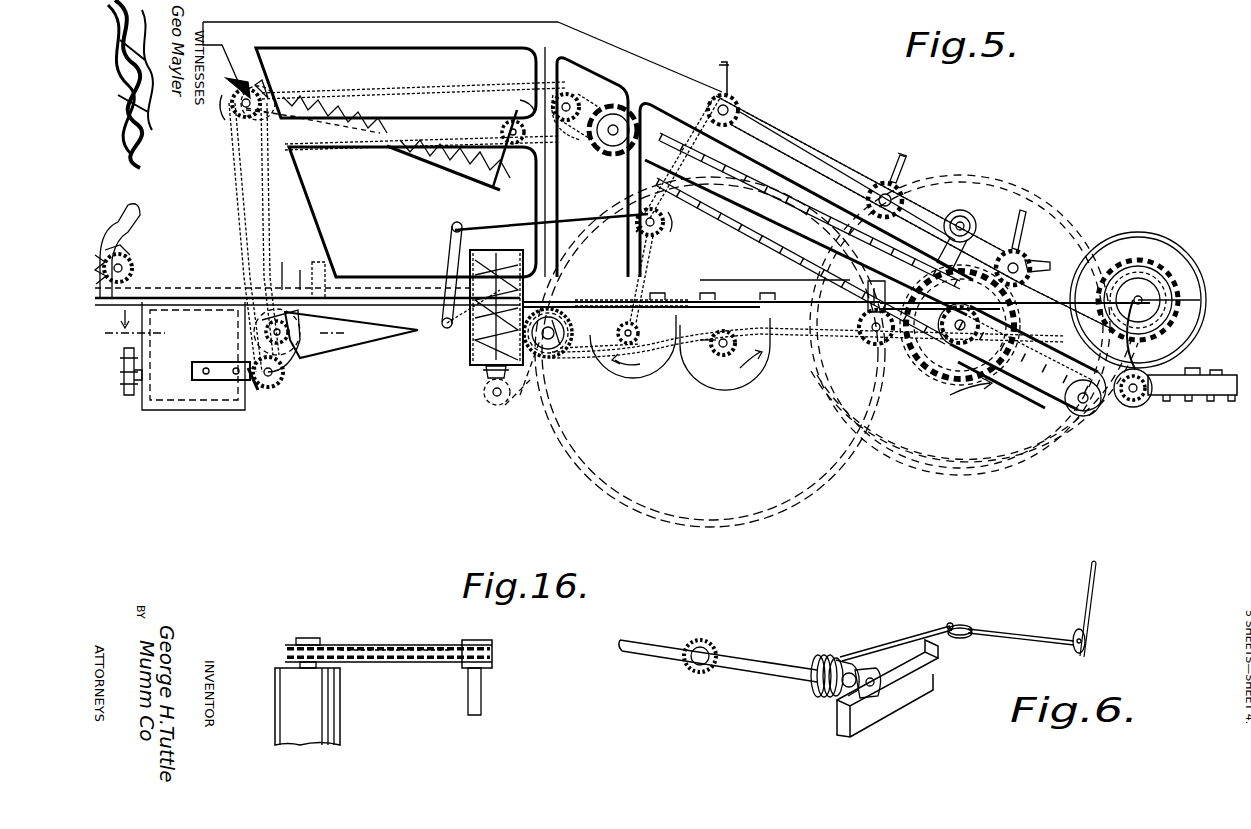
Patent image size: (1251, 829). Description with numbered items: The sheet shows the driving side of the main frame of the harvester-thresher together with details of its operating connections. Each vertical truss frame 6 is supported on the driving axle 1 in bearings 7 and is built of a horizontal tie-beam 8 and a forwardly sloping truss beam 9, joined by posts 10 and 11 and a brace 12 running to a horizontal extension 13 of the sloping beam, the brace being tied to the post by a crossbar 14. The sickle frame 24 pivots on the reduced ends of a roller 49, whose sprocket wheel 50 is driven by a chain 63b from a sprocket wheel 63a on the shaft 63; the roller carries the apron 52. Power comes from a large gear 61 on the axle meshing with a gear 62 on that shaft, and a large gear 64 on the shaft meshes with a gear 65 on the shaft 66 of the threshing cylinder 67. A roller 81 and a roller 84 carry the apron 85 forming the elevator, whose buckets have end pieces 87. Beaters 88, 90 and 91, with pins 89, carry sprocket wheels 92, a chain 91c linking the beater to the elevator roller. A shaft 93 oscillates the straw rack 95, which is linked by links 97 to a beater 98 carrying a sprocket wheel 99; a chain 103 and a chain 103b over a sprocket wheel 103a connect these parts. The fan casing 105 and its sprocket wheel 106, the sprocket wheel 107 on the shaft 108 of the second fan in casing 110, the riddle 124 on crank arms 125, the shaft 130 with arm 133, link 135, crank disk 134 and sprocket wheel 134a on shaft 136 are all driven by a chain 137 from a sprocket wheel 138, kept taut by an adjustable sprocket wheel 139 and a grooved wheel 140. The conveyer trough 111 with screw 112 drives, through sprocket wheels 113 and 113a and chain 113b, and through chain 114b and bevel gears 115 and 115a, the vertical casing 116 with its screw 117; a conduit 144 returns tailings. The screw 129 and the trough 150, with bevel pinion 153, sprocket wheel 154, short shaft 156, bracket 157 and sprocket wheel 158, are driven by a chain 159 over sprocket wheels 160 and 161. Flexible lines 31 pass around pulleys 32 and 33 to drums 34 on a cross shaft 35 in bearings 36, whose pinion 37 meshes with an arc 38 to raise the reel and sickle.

In FIG. 5, the driving axle 1 is at (702, 343).
In FIG. 5, the vertical truss frames 6 is at (552, 34).
In FIG. 5, the bearings 7 is at (716, 310).
In FIG. 5, the horizontal tie-beam 8 is at (382, 295).
In FIG. 6, the horizontal tie-beam 8 is at (917, 682).
In FIG. 5, the forwardly sloping truss beam 9 is at (762, 150).
In FIG. 5, the post 10 is at (642, 262).
In FIG. 5, the post 11 is at (540, 205).
In FIG. 5, the brace 12 is at (300, 188).
In FIG. 5, the horizontal extension 13 is at (355, 35).
In FIG. 5, the crossbar 14 is at (405, 135).
In FIG. 5, the sickle frame 24 is at (1210, 397).
In FIG. 6, the flexible lines 31 is at (1095, 577).
In FIG. 6, the pulley 32 is at (1086, 640).
In FIG. 6, the pulley 33 is at (967, 626).
In FIG. 5, the drum 34 is at (126, 262).
In FIG. 6, the drum 34 is at (832, 656).
In FIG. 5, the cross shaft 35 is at (134, 268).
In FIG. 6, the cross shaft 35 is at (745, 659).
In FIG. 6, the bearings 36 is at (868, 700).
In FIG. 5, the pinion 37 is at (119, 248).
In FIG. 6, the pinion 37 is at (708, 640).
In FIG. 5, the arc 38 is at (128, 212).
In FIG. 5, the roller 49 is at (1134, 401).
In FIG. 5, the sprocket wheel 50 is at (1155, 385).
In FIG. 5, the apron 52 is at (1198, 370).
In FIG. 5, the large gear 61 is at (710, 352).
In FIG. 5, the gear 62 is at (962, 358).
In FIG. 5, the shaft 63 is at (942, 345).
In FIG. 5, the sprocket wheel 63a is at (995, 312).
In FIG. 5, the chain 63b is at (1036, 380).
In FIG. 5, the large gear 64 is at (995, 445).
In FIG. 5, the gear 65 is at (1128, 265).
In FIG. 5, the shaft 66 is at (1150, 290).
In FIG. 5, the threshing cylinder 67 is at (1176, 248).
In FIG. 5, the roller 81 is at (1082, 410).
In FIG. 5, the roller 84 is at (608, 154).
In FIG. 5, the apron 85 is at (726, 214).
In FIG. 5, the end pieces 87 is at (770, 206).
In FIG. 5, the beater 88 is at (1020, 246).
In FIG. 5, the pins 89 is at (1016, 232).
In FIG. 5, the beater 90 is at (905, 166).
In FIG. 5, the beater 91 is at (730, 80).
In FIG. 5, the chain 91c is at (682, 156).
In FIG. 5, the sprocket wheels 92 is at (745, 108).
In FIG. 5, the shaft 93 is at (235, 125).
In FIG. 5, the straw rack 95 is at (335, 118).
In FIG. 5, the links 97 is at (490, 180).
In FIG. 5, the beater 98 is at (508, 120).
In FIG. 5, the sprocket wheel 99 is at (422, 135).
In FIG. 5, the chain 103 is at (617, 90).
In FIG. 5, the sprocket wheel 103a is at (578, 90).
In FIG. 5, the chain 103b is at (442, 92).
In FIG. 5, the casing 105 is at (752, 372).
In FIG. 5, the sprocket wheel 106 is at (718, 358).
In FIG. 5, the sprocket wheel 107 is at (618, 344).
In FIG. 5, the shaft 108 is at (617, 332).
In FIG. 16, the shaft 108 is at (484, 665).
In FIG. 5, the casing 110 is at (650, 368).
In FIG. 5, the trough 111 is at (549, 319).
In FIG. 16, the trough 111 is at (330, 690).
In FIG. 5, the screw 112 is at (555, 350).
In FIG. 16, the screw 112 is at (306, 640).
In FIG. 16, the sprocket wheel 113 is at (290, 645).
In FIG. 16, the sprocket wheel 113a is at (485, 642).
In FIG. 5, the chain 113b is at (632, 293).
In FIG. 16, the chain 113b is at (385, 645).
In FIG. 5, the chain 114b is at (522, 400).
In FIG. 5, the bevel gear 115 is at (494, 400).
In FIG. 5, the bevel gear 115a is at (485, 372).
In FIG. 5, the vertical casing 116 is at (470, 326).
In FIG. 5, the screw 117 is at (472, 346).
In FIG. 5, the riddle 124 is at (290, 288).
In FIG. 5, the crank arms 125 is at (324, 252).
In FIG. 5, the screw 129 is at (290, 330).
In FIG. 5, the shaft 130 is at (452, 330).
In FIG. 5, the arm 133 is at (452, 252).
In FIG. 5, the crank disk 134 is at (664, 222).
In FIG. 5, the sprocket wheel 134a is at (658, 236).
In FIG. 5, the link 135 is at (510, 230).
In FIG. 5, the shaft 136 is at (640, 228).
In FIG. 5, the chain 137 is at (848, 342).
In FIG. 5, the sprocket wheel 138 is at (1183, 300).
In FIG. 5, the adjustable sprocket wheel 139 is at (860, 322).
In FIG. 5, the grooved wheel 140 is at (960, 212).
In FIG. 5, the conduit 144 is at (351, 334).
In FIG. 5, the trough 150 is at (193, 356).
In FIG. 5, the bevel pinion 153 is at (256, 392).
In FIG. 5, the sprocket wheel 154 is at (124, 380).
In FIG. 5, the short shaft 156 is at (122, 360).
In FIG. 5, the bracket 157 is at (219, 370).
In FIG. 5, the sprocket wheel 158 is at (285, 378).
In FIG. 5, the chain 159 is at (233, 212).
In FIG. 5, the sprocket wheel 160 is at (256, 96).
In FIG. 5, the sprocket wheel 161 is at (278, 320).